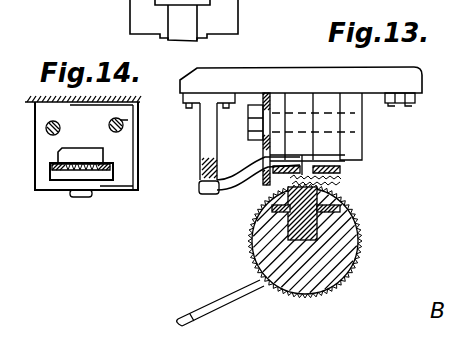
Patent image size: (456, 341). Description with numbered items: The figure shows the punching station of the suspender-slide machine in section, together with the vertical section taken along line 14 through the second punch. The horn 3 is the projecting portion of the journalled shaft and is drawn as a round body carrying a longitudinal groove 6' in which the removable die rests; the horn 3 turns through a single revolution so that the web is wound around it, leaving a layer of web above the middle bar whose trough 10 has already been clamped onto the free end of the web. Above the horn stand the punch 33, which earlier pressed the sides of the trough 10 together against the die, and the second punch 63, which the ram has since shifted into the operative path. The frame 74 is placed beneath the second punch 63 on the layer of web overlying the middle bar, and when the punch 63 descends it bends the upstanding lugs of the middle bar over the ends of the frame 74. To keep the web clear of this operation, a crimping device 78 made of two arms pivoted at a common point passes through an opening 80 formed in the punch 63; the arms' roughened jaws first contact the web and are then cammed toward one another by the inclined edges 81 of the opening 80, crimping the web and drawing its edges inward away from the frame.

In FIG. 13, the second punch 63 is at (265, 110).
In FIG. 14, the second punch 63 is at (133, 138).
In FIG. 13, the section line 14— 14 is at (268, 87).
In FIG. 13, the punch 33 is at (362, 131).
In FIG. 13, the frame 74 is at (298, 156).
In FIG. 13, the crimping device 78 is at (245, 150).
In FIG. 13, the horn 3 is at (268, 262).
In FIG. 13, the longitudinal groove 6' is at (271, 217).
In FIG. 13, the trough 10 is at (340, 203).
In FIG. 14, the opening 80 is at (78, 176).
In FIG. 14, the inclined edges 81 is at (105, 161).